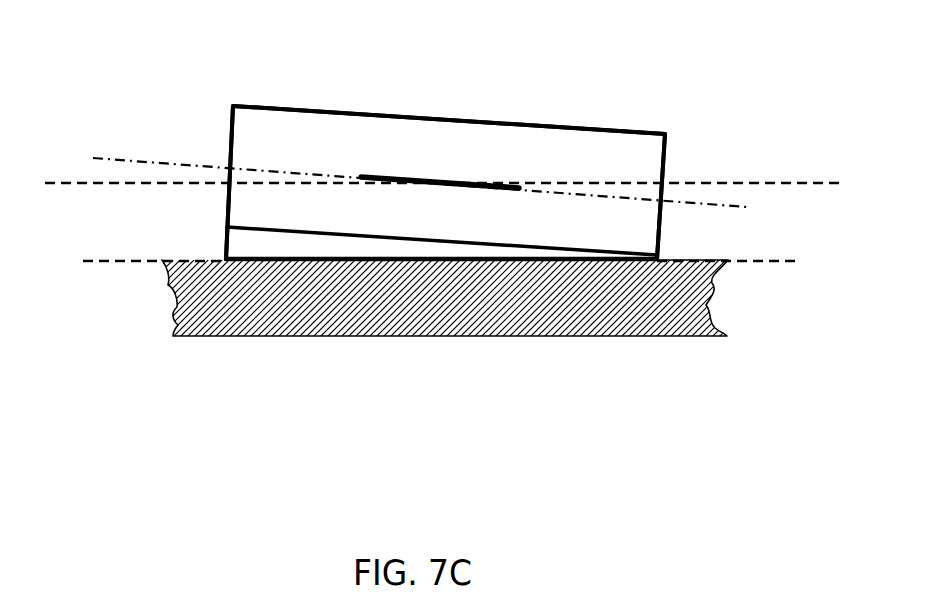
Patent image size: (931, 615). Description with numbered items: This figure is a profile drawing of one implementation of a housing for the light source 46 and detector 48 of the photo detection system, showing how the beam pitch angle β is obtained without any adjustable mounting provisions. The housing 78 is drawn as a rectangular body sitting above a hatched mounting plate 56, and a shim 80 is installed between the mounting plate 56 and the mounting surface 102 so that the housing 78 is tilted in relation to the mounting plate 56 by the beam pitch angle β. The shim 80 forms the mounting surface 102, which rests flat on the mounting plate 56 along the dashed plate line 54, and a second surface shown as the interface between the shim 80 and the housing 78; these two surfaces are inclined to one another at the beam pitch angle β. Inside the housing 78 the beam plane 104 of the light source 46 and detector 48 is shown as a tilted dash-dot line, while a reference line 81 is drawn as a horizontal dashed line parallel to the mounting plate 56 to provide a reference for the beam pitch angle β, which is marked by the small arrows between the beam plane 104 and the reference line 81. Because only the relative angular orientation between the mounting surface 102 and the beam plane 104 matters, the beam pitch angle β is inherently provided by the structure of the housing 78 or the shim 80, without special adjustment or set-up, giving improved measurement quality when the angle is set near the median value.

The light source 46 is at (365, 132).
The detector 48 is at (365, 132).
The surface plane 54 is at (773, 262).
The mounting plate 56 is at (280, 318).
The housing 78 is at (585, 138).
The shim 80 is at (253, 245).
The reference line 81 is at (745, 180).
The mounting surface 102 is at (525, 263).
The beam plane 104 is at (115, 157).